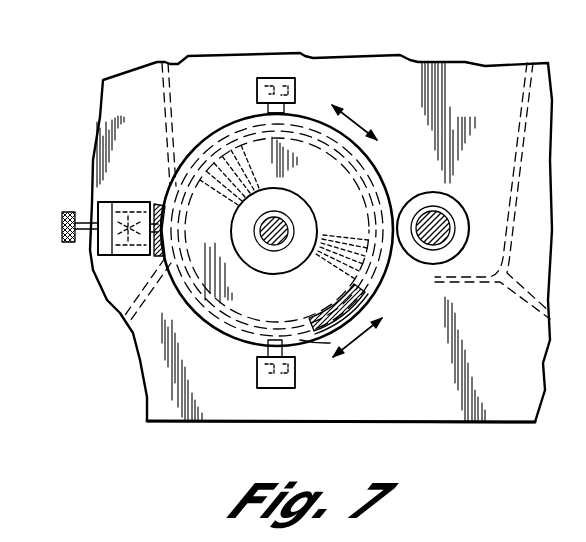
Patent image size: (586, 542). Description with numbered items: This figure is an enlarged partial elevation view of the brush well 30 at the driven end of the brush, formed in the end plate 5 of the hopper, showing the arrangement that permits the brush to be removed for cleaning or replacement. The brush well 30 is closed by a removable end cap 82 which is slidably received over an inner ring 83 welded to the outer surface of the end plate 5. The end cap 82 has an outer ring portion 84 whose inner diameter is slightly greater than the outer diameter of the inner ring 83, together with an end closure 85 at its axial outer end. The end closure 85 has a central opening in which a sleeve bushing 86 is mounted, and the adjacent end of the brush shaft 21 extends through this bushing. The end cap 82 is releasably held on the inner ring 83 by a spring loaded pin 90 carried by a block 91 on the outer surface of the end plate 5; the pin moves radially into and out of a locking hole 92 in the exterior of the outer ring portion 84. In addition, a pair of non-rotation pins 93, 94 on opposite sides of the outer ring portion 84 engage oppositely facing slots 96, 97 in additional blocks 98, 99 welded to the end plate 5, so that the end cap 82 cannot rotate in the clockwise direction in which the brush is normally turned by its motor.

The end plate 5 is at (195, 69).
The brush shaft 21 is at (260, 229).
The brush well 30 is at (193, 148).
The removable end cap 82 is at (380, 170).
The inner ring 83 is at (360, 294).
The outer ring portion 84 is at (323, 336).
The end closure 85 is at (277, 230).
The sleeve bushing 86 is at (284, 194).
The spring loaded pin 90 is at (97, 243).
The block 91 is at (122, 250).
The locking hole 92 is at (159, 210).
The non-rotation pin 93 is at (257, 92).
The non-rotation pin 94 is at (300, 368).
The slot 96 is at (268, 77).
The slot 97 is at (283, 378).
The additional block 98 is at (295, 84).
The additional block 99 is at (257, 373).